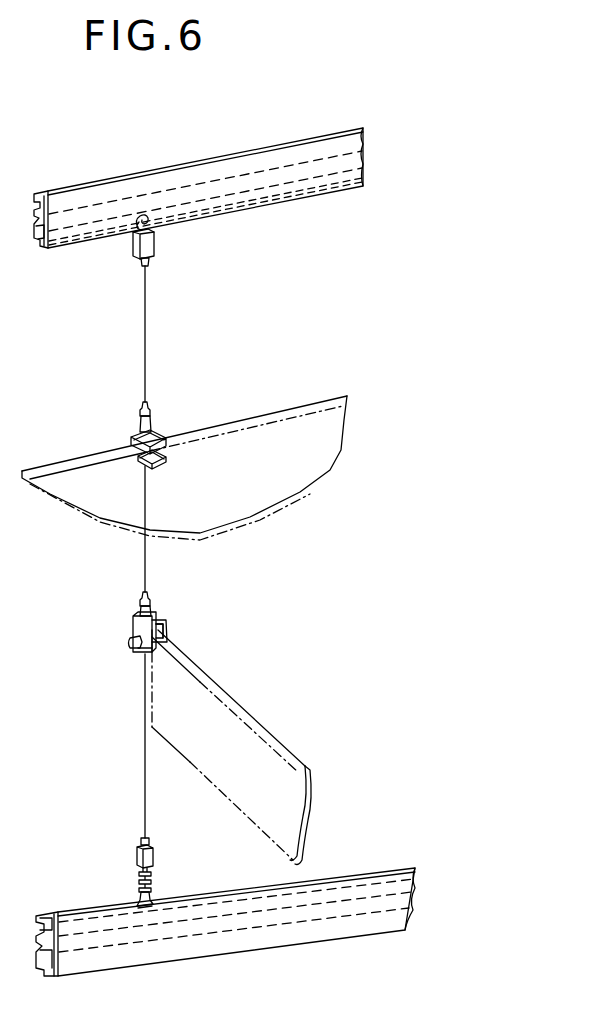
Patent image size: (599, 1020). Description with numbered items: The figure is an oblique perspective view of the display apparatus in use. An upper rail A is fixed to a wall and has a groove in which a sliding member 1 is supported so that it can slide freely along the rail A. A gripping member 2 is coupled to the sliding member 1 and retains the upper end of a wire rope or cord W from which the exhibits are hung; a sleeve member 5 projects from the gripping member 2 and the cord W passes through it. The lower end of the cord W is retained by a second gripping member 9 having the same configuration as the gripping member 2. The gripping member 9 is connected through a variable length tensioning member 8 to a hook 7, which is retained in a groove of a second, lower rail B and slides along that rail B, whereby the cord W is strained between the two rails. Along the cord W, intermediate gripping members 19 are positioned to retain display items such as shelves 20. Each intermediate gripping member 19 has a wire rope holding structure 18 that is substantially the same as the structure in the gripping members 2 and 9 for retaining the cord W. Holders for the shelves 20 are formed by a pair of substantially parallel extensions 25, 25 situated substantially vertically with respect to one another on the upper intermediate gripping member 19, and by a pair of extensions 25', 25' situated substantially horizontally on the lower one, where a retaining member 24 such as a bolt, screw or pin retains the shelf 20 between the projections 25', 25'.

The rail A is at (254, 153).
The second rail B is at (272, 944).
The sliding member 1 is at (137, 213).
The gripping member 2 is at (155, 244).
The sleeve member 5 is at (142, 260).
The wire rope or cord W is at (146, 324).
The wire rope holding structure 18 is at (140, 406).
The intermediate gripping member 19 is at (132, 438).
The extensions 25 is at (163, 446).
The extensions 25' is at (157, 642).
The retaining member 24 is at (130, 642).
The shelves 20 is at (276, 420).
The gripping member 9 is at (138, 857).
The variable length tensioning member 8 is at (150, 890).
The hook 7 is at (142, 898).